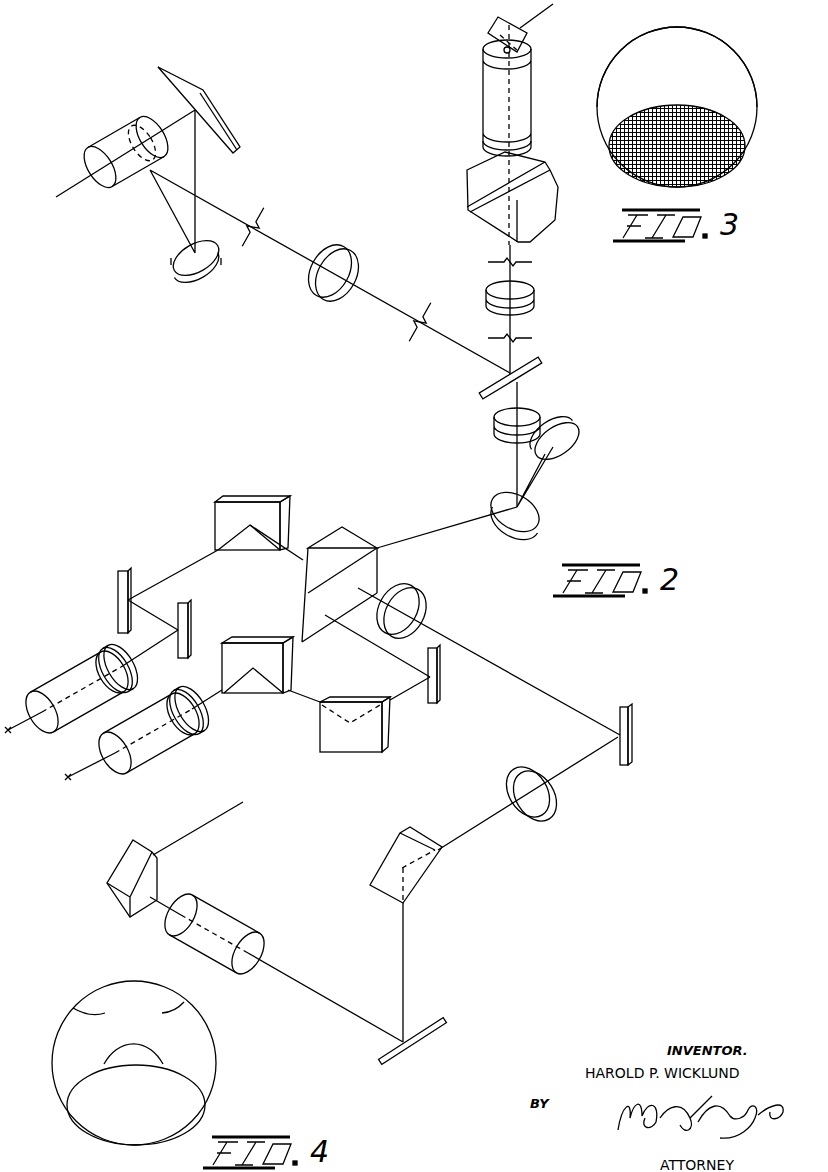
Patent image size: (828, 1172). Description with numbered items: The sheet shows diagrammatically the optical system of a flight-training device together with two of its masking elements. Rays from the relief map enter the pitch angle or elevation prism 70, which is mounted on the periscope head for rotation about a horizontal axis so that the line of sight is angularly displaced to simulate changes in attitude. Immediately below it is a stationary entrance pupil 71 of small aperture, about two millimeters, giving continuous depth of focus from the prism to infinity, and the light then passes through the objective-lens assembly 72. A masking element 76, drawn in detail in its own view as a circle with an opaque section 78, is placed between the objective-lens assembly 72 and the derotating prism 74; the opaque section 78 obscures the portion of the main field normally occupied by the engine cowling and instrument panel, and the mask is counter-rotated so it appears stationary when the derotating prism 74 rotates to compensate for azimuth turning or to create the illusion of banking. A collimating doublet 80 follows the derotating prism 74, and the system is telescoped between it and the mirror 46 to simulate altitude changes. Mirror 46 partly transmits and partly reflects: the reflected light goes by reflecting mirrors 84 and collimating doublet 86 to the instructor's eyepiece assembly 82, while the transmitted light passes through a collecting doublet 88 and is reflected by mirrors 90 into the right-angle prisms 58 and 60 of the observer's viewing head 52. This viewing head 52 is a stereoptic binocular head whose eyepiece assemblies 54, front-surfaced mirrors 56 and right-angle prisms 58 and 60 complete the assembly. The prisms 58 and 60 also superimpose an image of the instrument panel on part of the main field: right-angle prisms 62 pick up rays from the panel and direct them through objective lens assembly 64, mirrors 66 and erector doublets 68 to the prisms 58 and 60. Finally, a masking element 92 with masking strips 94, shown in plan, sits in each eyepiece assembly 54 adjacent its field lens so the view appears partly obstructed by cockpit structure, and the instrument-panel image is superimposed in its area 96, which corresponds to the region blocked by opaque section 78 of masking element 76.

In FIG. 2, the mirror 46 is at (544, 361).
In FIG. 2, the viewing head 52 is at (155, 530).
In FIG. 2, the eyepiece assemblies 54 is at (167, 748).
In FIG. 2, the front-surfaced mirrors 56 is at (367, 747).
In FIG. 2, the right-angle prism 58 is at (348, 537).
In FIG. 2, the right-angle prism 60 is at (305, 565).
In FIG. 2, the right-angle prisms 62 is at (158, 873).
In FIG. 2, the objective lens assembly 64 is at (230, 911).
In FIG. 2, the mirrors 66 is at (430, 1040).
In FIG. 2, the erector doublets 68 is at (528, 831).
In FIG. 2, the elevation prism 70 is at (525, 40).
In FIG. 2, the entrance pupil 71 is at (490, 47).
In FIG. 2, the objective-lens assembly 72 is at (533, 96).
In FIG. 2, the derotating prism 74 is at (558, 187).
In FIG. 2, the masking element 76 is at (490, 147).
In FIG. 3, the masking element 76 is at (729, 53).
In FIG. 3, the opaque section 78 is at (723, 165).
In FIG. 2, the collimating doublet 80 is at (534, 296).
In FIG. 2, the eyepiece assembly 82 is at (105, 132).
In FIG. 2, the reflecting mirrors 84 is at (195, 273).
In FIG. 2, the collimating doublet 86 is at (345, 255).
In FIG. 2, the collecting doublet 88 is at (541, 418).
In FIG. 2, the mirrors 90 is at (541, 519).
In FIG. 2, the masking element 92 is at (200, 727).
In FIG. 4, the masking element 92 is at (206, 1067).
In FIG. 4, the masking strips 94 is at (163, 1025).
In FIG. 4, the area 96 is at (146, 1116).